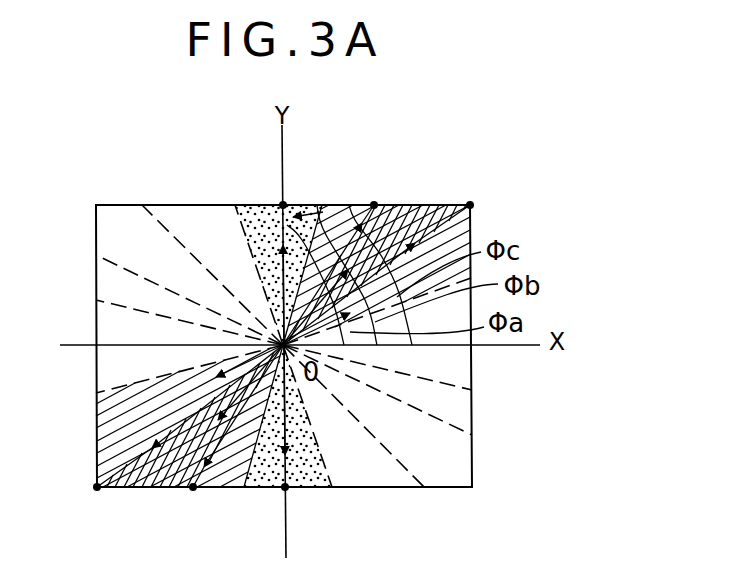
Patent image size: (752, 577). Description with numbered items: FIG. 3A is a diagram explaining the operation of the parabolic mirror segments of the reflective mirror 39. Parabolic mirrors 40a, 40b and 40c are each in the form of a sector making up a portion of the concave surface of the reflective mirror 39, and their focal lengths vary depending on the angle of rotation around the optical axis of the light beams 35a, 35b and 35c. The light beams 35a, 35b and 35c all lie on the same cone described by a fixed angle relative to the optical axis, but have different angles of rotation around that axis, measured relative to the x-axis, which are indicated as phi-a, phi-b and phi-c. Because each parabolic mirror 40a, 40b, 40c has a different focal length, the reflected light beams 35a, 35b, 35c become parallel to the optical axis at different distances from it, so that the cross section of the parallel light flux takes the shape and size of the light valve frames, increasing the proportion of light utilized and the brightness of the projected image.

The reflective mirror 39 is at (420, 551).
The parabolic mirror 40c is at (253, 205).
The light beam 35c is at (312, 205).
The light beam 35b is at (355, 205).
The parabolic mirror 40b is at (400, 205).
The parabolic mirror 40a is at (450, 205).
The light beam 35a is at (467, 222).